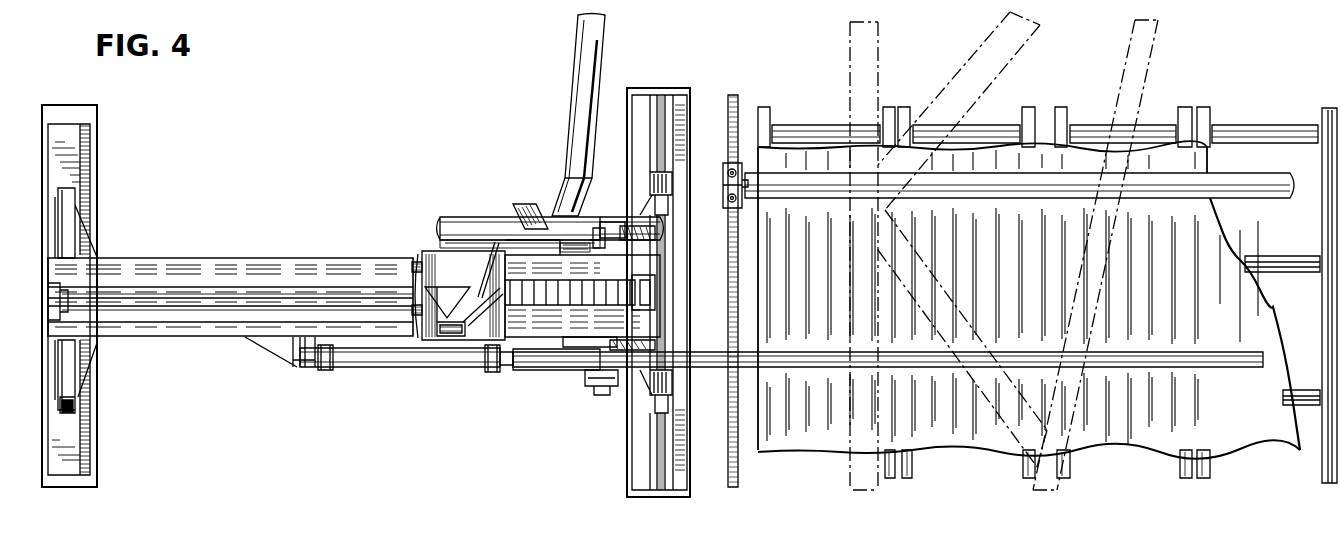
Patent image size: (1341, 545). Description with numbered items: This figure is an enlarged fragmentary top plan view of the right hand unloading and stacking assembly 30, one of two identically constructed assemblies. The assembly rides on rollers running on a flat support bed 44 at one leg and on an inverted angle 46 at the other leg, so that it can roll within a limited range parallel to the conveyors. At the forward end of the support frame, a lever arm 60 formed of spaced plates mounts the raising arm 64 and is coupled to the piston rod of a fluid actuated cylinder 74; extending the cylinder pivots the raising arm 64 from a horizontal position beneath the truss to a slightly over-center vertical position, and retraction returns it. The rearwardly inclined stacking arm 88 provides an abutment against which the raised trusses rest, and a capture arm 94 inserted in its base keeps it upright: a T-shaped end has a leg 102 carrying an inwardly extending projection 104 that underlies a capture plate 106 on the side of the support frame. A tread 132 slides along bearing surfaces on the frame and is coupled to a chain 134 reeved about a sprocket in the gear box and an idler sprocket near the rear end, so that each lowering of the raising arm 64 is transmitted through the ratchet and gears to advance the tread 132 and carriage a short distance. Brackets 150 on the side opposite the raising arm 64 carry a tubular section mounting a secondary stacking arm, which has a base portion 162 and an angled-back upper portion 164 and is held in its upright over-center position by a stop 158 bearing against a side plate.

The right hand unloading and stacking assembly 30 is at (318, 258).
The flat support bed 44 is at (95, 450).
The inverted angle 46 is at (653, 440).
The lever arm 60 is at (562, 370).
The raising arm 64 is at (938, 362).
The fluid actuated cylinder 74 is at (372, 366).
The stacking arm 88 is at (453, 338).
The capture arm 94 is at (480, 262).
The leg of T-shaped element 102 is at (475, 236).
The inwardly extending projection 104 is at (426, 250).
The capture plate 106 is at (585, 238).
The tread 132 is at (556, 296).
The chain 134 is at (225, 298).
The brackets 150 is at (668, 230).
The stop 158 is at (525, 205).
The base portion 162 is at (560, 170).
The upper portion 164 is at (573, 98).